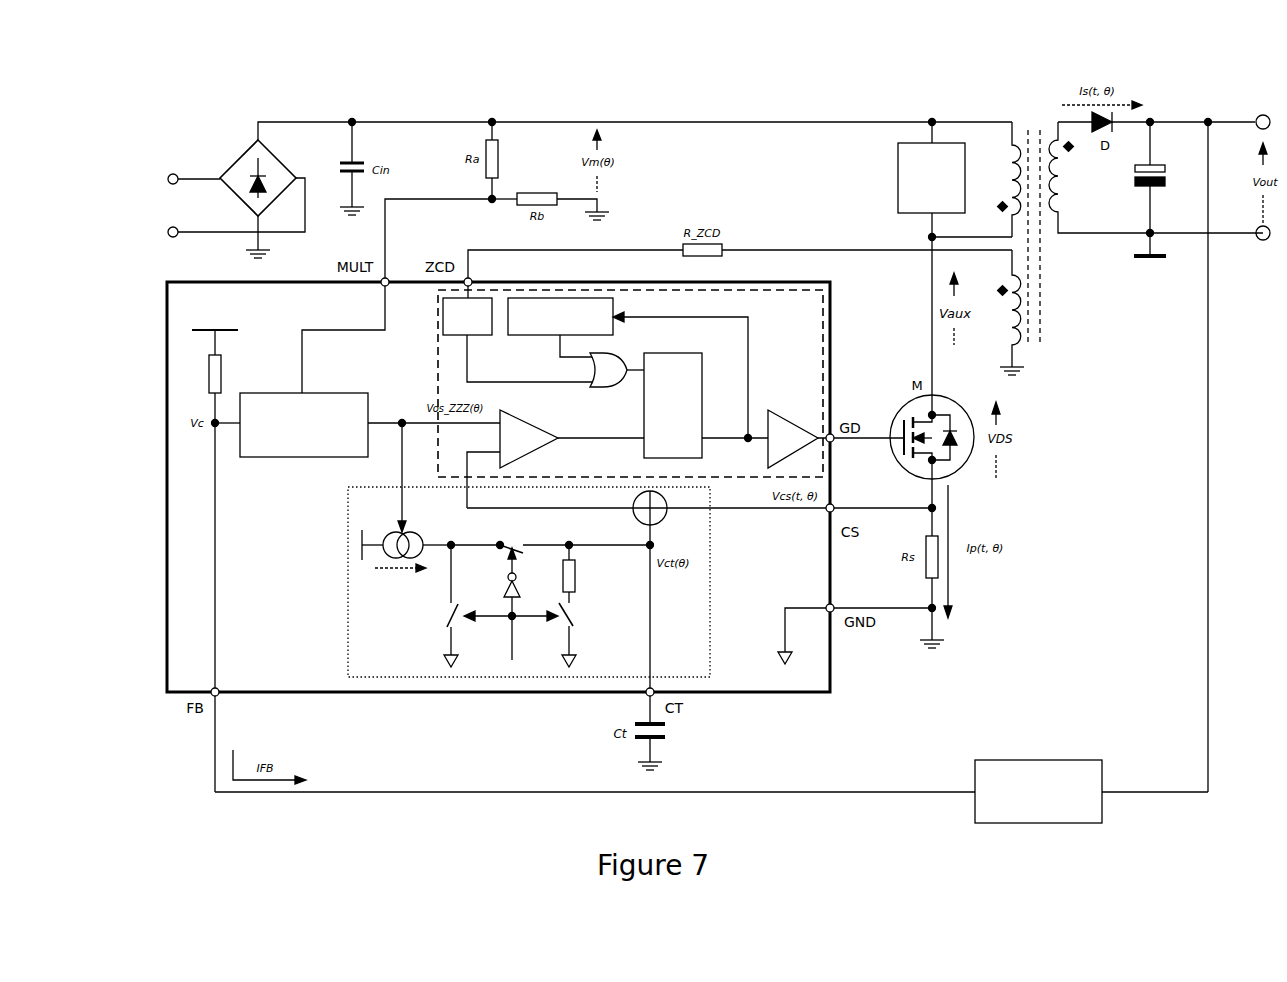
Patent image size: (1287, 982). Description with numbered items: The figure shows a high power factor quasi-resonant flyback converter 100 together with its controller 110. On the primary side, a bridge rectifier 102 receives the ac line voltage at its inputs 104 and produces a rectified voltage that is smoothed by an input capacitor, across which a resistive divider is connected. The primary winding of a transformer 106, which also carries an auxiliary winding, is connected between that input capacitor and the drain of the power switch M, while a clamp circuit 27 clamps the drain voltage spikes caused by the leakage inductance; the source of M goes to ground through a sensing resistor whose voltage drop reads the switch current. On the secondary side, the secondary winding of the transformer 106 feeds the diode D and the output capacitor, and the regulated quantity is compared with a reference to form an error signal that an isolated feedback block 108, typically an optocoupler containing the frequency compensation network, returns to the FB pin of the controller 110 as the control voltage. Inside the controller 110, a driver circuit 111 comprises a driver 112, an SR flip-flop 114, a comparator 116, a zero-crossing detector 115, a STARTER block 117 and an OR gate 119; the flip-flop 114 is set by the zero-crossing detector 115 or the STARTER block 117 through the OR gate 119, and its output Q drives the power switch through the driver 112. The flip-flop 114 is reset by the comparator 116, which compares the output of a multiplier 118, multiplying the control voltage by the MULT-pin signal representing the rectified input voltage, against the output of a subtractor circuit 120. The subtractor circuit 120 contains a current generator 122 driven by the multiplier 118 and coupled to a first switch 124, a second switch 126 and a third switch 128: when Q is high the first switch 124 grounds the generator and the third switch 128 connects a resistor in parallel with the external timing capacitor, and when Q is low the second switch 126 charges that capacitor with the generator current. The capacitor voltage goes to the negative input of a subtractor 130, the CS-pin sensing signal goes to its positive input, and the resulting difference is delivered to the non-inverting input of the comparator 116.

The clamp circuit 27 is at (942, 143).
The hi-PF QR flyback converter 100 is at (775, 82).
The bridge rectifier 102 is at (232, 158).
The inputs 104 is at (168, 232).
The transformer 106 is at (1042, 220).
The isolated feedback block 108 is at (1068, 760).
The controller 110 is at (166, 460).
The driver circuit 111 is at (782, 290).
The driver 112 is at (800, 430).
The Set-Reset (SR) flip-flop 114 is at (703, 366).
The zero-crossing detector 115 is at (442, 316).
The comparator 116 is at (515, 432).
The STARTER block 117 is at (535, 297).
The multiplier 118 is at (292, 457).
The OR gate 119 is at (596, 372).
The subtractor circuit 120 is at (348, 605).
The current generator 122 is at (360, 552).
The first switch 124 is at (460, 622).
The second switch 126 is at (515, 543).
The third switch 128 is at (572, 622).
The subtractor 130 is at (668, 518).